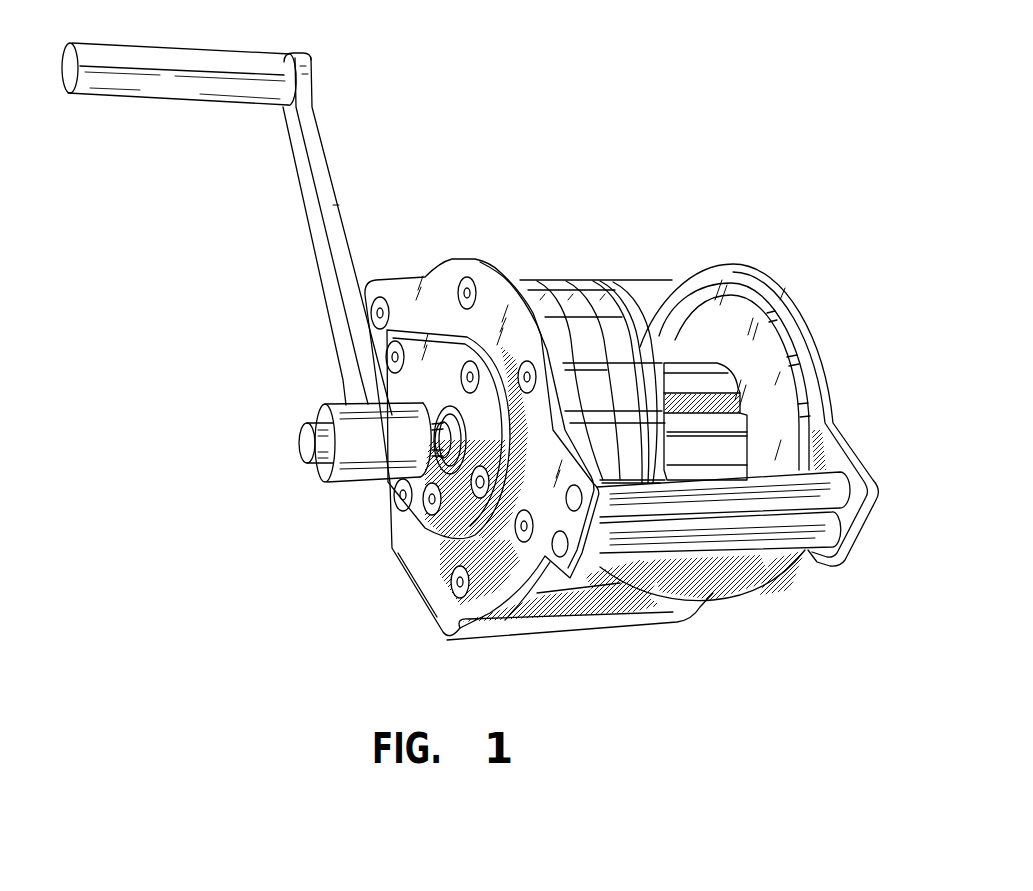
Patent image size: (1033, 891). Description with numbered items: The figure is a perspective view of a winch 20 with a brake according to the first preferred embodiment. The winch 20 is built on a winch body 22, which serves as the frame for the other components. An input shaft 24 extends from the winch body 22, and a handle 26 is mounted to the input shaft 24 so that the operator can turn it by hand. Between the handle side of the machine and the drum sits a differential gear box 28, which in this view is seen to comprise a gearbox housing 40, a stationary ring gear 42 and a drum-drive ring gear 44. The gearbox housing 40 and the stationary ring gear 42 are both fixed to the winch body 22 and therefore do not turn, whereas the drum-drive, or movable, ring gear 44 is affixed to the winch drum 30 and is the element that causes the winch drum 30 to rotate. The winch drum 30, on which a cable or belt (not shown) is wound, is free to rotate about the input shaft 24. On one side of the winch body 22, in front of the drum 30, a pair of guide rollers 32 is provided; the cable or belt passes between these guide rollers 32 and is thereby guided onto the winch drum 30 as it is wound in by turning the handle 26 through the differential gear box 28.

The winch 20 is at (688, 110).
The winch body 22 is at (713, 265).
The input shaft 24 is at (300, 452).
The handle 26 is at (322, 137).
The differential gear box 28 is at (585, 247).
The winch drum 30 is at (703, 380).
The guide rollers 32 is at (777, 507).
The gearbox housing 40 is at (543, 295).
The stationary ring gear 42 is at (570, 298).
The drum-drive ring gear 44 is at (602, 298).